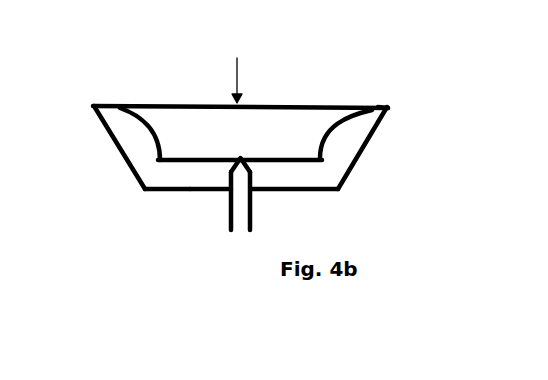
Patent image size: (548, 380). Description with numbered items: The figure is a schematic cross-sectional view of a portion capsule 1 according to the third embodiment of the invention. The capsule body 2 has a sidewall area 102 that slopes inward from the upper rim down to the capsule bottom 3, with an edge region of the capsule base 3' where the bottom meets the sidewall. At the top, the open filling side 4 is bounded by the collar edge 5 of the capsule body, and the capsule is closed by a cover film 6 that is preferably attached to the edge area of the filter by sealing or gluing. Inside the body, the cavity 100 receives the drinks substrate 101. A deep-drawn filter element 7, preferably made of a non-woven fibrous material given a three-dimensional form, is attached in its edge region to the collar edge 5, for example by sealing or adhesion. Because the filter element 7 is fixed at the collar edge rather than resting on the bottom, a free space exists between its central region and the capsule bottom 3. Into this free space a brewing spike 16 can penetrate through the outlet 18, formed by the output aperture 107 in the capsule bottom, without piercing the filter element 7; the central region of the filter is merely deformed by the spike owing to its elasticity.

The portion capsule 1 is at (135, 78).
The capsule body 2 is at (124, 146).
The sidewall area 102 is at (362, 148).
The capsule bottom 3 is at (241, 222).
The edge region of the capsule base 3' is at (144, 222).
The filling side 4 is at (238, 70).
The collar edge 5 is at (378, 112).
The cover film 6 is at (323, 105).
The filter element 7 is at (281, 172).
The perforation means/brewing spike 16 is at (242, 208).
The outlet 18 is at (223, 192).
The output aperture 107 is at (240, 165).
The cavity 100 is at (192, 122).
The drinks substrate 101 is at (346, 134).